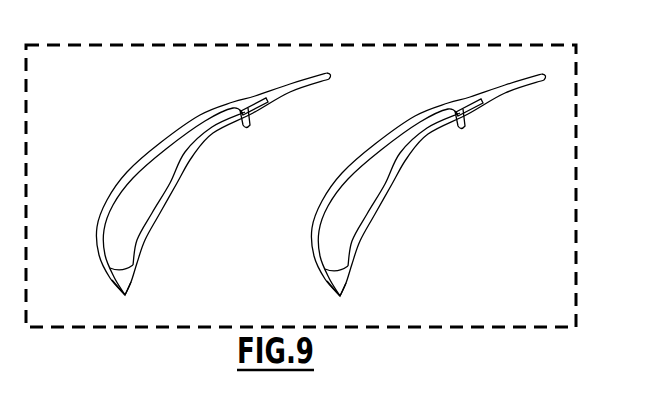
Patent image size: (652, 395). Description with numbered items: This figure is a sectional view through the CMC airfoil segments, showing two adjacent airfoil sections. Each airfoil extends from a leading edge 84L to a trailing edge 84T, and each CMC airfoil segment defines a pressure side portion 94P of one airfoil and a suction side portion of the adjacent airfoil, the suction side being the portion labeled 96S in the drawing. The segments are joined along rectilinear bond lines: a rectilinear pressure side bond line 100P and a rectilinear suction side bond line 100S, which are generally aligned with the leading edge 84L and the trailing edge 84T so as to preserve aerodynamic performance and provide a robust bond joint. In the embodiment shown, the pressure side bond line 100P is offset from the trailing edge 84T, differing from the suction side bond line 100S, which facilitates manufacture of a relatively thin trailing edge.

The trailing edge 84T is at (330, 76).
The leading edge 84L is at (125, 295).
The suction side wall 96S is at (127, 172).
The pressure side portion 94P is at (188, 162).
The rectilinear pressure side bond line 100P is at (238, 112).
The rectilinear suction side bond line 100S is at (218, 122).